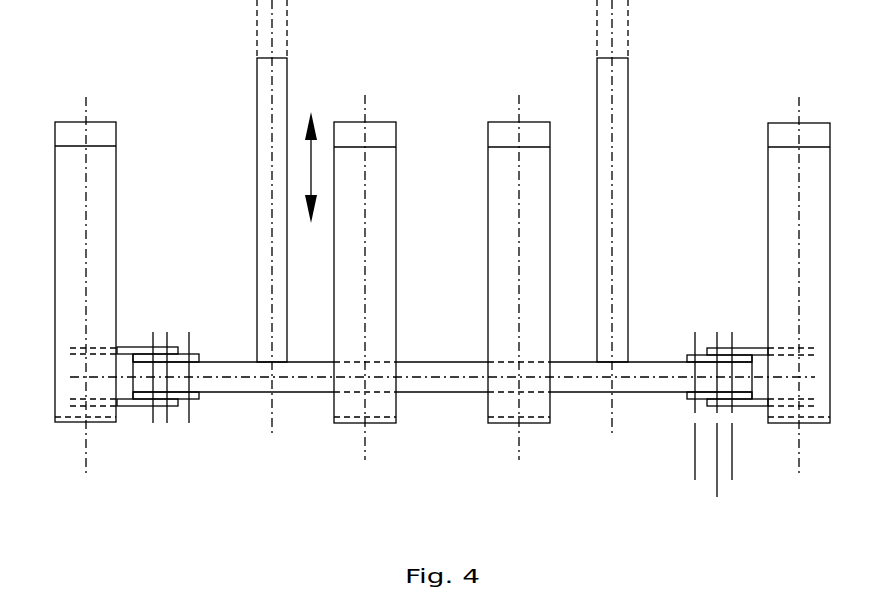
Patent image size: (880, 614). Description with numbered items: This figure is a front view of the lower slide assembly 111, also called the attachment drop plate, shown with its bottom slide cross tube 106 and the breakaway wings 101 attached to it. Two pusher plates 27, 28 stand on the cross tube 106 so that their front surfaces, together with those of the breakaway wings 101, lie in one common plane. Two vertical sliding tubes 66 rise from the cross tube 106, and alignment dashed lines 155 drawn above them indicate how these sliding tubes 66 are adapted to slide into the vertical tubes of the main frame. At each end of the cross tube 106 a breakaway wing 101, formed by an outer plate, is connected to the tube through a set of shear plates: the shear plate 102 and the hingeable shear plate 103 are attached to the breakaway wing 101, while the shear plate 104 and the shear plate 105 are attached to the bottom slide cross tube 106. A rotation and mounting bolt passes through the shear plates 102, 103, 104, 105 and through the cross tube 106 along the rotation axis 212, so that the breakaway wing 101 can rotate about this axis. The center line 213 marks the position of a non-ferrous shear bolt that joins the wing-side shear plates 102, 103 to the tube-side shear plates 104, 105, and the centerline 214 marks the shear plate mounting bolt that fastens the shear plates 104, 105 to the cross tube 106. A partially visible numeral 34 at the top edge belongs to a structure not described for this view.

The breakaway wing 101 is at (62, 200).
The sliding tube 66 is at (262, 108).
The alignment dashed line 155 is at (257, 42).
The pusher plate 27 is at (387, 237).
The pusher plate 28 is at (497, 239).
The bottom slide cross tube 106 is at (292, 383).
The shear plate 102 is at (125, 350).
The hingeable shear plate 103 is at (125, 410).
The shear plate 104 is at (197, 357).
The shear plate 105 is at (195, 402).
The lower slide assembly 111 is at (745, 70).
The rotation axis 212 is at (744, 483).
The center line of non-ferrous shear bolt 213 is at (708, 499).
The centerline of shear plate mounting bolt 214 is at (684, 479).
The support 34 is at (514, 4).